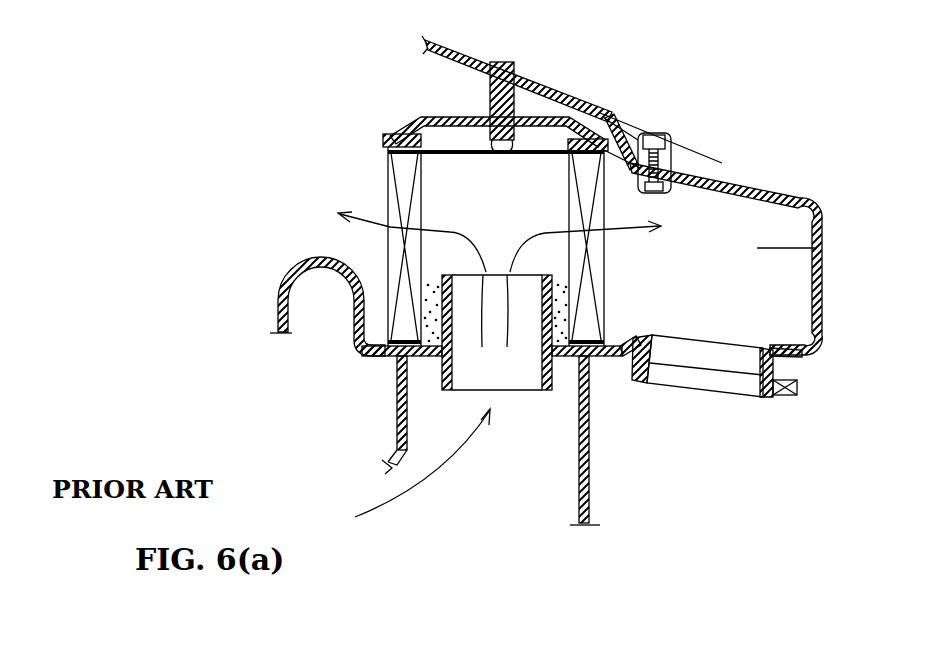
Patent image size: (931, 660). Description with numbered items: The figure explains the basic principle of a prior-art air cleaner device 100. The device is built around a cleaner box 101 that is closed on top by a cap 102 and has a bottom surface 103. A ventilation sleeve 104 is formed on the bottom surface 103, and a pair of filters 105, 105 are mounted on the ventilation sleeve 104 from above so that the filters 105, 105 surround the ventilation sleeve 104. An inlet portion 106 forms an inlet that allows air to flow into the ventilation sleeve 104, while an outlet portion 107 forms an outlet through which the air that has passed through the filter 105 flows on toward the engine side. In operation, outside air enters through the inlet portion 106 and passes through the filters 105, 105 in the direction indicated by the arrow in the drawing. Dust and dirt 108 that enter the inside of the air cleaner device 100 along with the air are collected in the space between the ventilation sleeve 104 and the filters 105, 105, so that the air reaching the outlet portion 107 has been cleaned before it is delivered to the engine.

The air cleaner device 100 is at (648, 96).
The cleaner box 101 is at (652, 128).
The cap 102 is at (490, 69).
The bottom surface 103 is at (362, 327).
The ventilation sleeve 104 is at (490, 272).
The filters 105 is at (392, 192).
The inlet portion 106 is at (397, 423).
The outlet portion 107 is at (678, 377).
The dust and dirt 108 is at (424, 360).